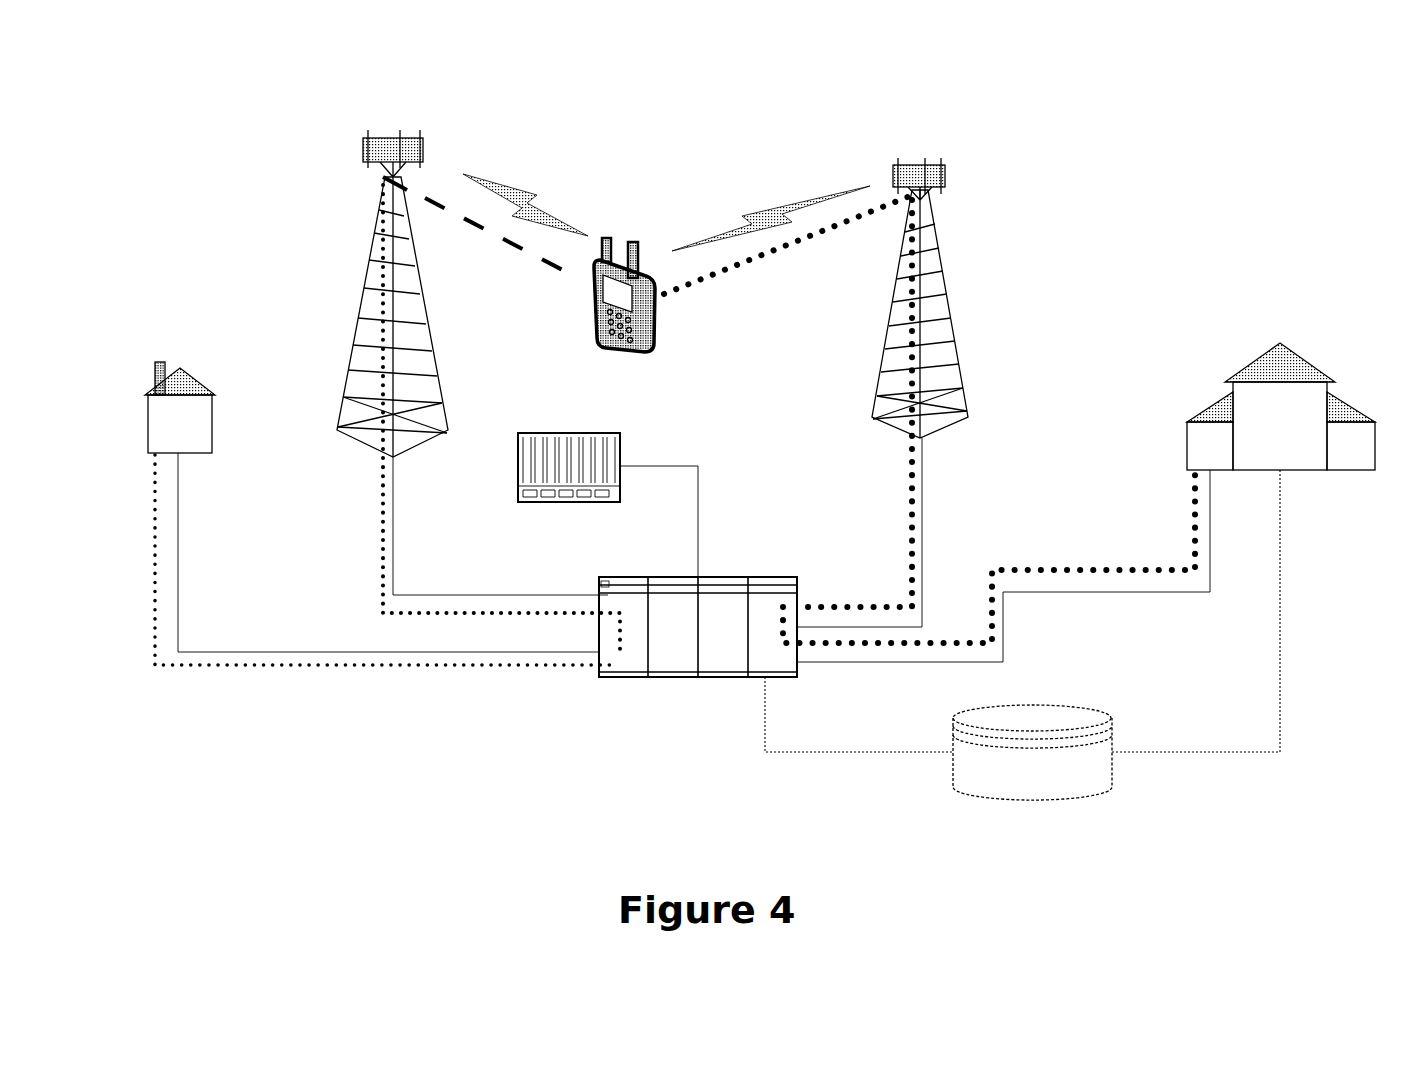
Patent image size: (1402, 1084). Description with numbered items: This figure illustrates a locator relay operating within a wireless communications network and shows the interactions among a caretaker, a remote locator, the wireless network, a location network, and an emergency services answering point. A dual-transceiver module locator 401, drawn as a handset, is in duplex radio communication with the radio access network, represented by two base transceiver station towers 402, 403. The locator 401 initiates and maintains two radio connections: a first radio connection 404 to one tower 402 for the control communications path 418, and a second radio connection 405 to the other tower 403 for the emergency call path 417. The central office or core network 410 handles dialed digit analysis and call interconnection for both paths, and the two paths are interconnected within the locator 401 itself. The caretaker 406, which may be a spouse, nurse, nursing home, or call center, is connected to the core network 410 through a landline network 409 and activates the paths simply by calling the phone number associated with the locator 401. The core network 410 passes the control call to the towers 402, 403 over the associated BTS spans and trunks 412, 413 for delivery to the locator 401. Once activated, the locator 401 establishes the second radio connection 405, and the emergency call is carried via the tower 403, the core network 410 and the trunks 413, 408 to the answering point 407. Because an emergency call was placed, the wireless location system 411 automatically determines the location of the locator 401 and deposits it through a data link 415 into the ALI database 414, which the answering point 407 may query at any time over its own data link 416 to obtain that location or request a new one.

The dual-transceiver module locator 401 is at (623, 321).
The base transceiver station tower 402 is at (392, 268).
The base transceiver station tower 403 is at (920, 274).
The first radio connection 404 is at (485, 214).
The second radio connection 405 is at (787, 227).
The caretaker 406 is at (180, 380).
The answering point 407 is at (1281, 369).
The trunk 408 is at (996, 566).
The landline network 409 is at (385, 559).
The central office 410 is at (698, 651).
The wireless location system 411 is at (608, 505).
The BTS span 412 is at (501, 417).
The BTS span 413 is at (897, 413).
The ALI database 414 is at (1032, 752).
The data link 415 is at (859, 714).
The data link 416 is at (1196, 611).
The emergency call path 417 is at (1038, 540).
The control communications path 418 is at (432, 692).